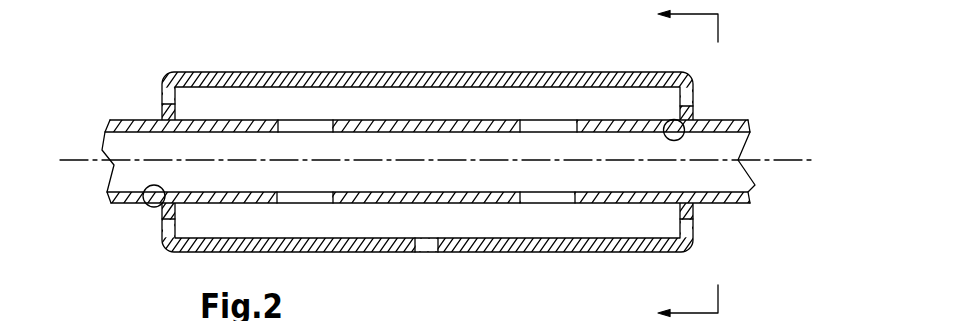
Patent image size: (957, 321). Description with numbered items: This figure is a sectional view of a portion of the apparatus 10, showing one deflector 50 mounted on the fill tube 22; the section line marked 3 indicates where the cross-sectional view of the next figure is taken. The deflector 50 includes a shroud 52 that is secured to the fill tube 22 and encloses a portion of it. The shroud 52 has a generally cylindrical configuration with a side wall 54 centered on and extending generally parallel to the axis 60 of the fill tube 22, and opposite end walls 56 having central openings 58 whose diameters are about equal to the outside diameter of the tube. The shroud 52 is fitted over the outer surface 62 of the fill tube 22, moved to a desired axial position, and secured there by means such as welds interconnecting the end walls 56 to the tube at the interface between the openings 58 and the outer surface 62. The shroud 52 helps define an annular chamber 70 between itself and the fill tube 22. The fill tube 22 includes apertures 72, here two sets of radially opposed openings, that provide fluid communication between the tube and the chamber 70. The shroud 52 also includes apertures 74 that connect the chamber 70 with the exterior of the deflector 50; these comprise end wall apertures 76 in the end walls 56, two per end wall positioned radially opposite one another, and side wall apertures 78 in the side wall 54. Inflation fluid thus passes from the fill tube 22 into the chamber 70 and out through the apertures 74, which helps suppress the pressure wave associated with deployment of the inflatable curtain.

The apparatus 10 is at (424, 148).
The fill tube 22 is at (443, 164).
The deflector 50 is at (424, 148).
The shroud 52 is at (475, 80).
The side wall 54 is at (412, 80).
The end walls 56 is at (173, 212).
The central openings 58 is at (665, 122).
The axis 60 is at (785, 167).
The outer surface 62 is at (137, 119).
The annular chamber 70 is at (513, 107).
The apertures 72 is at (318, 197).
The apertures 74 is at (442, 154).
The end wall apertures 76 is at (167, 97).
The side wall apertures 78 is at (428, 243).
The section line 3- 3 is at (678, 162).